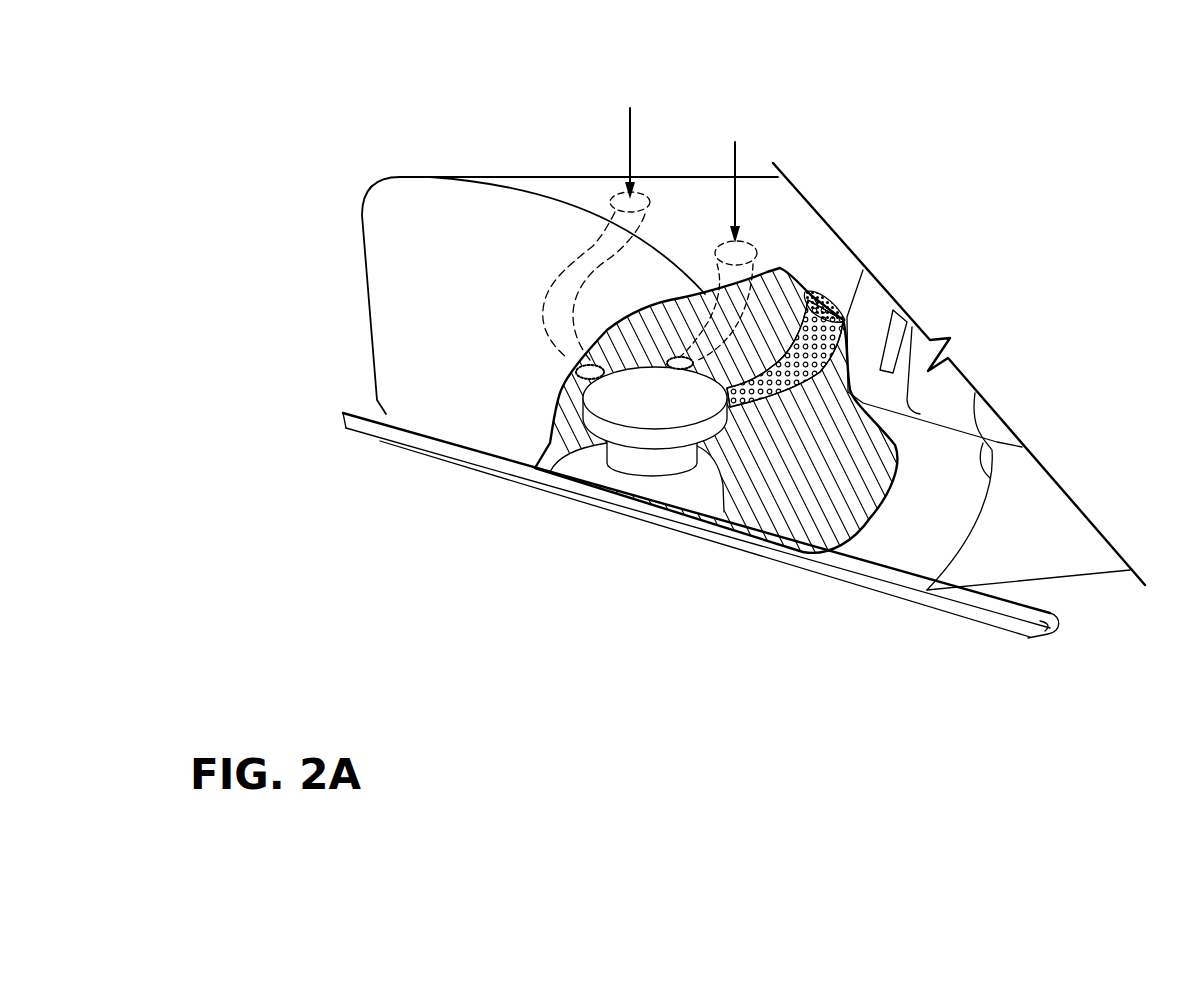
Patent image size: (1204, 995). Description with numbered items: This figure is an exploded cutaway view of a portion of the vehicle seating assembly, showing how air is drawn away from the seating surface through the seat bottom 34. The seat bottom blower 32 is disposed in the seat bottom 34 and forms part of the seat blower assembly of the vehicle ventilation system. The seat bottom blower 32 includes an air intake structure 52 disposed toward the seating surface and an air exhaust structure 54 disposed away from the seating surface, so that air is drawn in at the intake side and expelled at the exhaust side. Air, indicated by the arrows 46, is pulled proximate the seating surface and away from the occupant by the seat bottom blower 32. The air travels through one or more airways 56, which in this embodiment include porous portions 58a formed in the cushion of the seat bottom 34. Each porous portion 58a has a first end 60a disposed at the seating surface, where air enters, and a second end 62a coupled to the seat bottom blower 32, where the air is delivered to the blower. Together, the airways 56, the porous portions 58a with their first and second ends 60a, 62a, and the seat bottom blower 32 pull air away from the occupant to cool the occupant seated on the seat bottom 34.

The seat bottom blower 32 is at (657, 407).
The seat bottom 34 is at (418, 310).
The arrows 46 is at (630, 122).
The air intake structure 52 is at (618, 350).
The air exhaust structure 54 is at (643, 472).
The airways 56 is at (580, 228).
The porous portions 58a is at (800, 405).
The first end 60a is at (827, 292).
The second end 62a is at (742, 425).